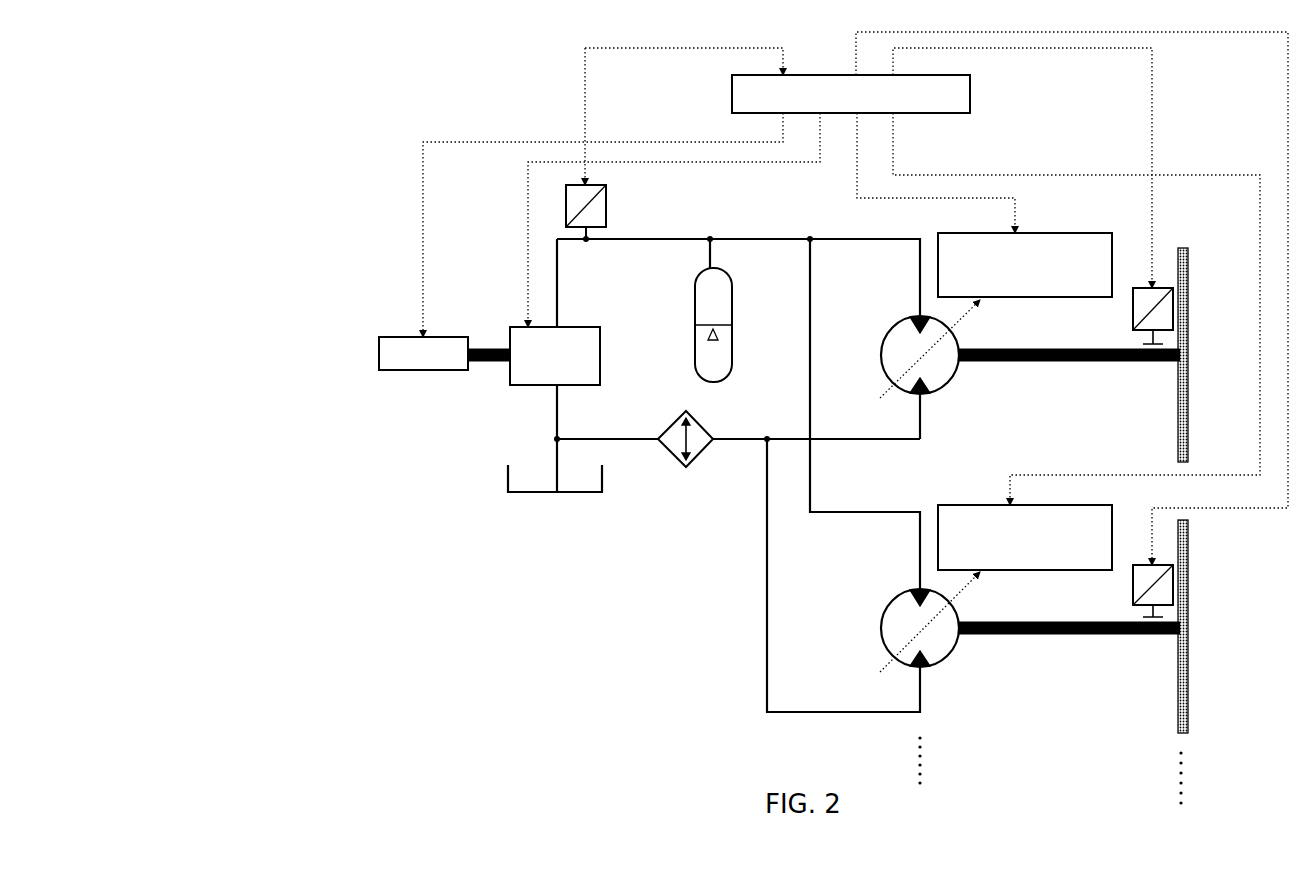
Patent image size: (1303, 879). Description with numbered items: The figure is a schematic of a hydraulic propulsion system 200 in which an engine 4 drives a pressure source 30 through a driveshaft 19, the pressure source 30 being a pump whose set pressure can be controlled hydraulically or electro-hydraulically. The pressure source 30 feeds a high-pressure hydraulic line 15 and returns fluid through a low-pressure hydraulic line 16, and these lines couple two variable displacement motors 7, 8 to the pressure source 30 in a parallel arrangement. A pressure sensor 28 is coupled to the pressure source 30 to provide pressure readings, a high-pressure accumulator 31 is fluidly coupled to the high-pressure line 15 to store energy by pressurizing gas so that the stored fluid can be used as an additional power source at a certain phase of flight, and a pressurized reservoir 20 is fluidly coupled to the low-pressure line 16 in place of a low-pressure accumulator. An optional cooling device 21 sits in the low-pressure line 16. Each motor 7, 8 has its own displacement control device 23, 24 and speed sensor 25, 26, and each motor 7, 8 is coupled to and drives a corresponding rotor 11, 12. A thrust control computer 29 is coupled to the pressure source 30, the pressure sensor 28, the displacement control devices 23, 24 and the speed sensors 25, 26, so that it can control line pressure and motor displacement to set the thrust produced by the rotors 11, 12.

The propulsion system 200 is at (146, 102).
The thrust control computer 29 is at (730, 90).
The pressure sensor 28 is at (608, 215).
The hydraulic line 15 is at (668, 243).
The hydraulic line 16 is at (598, 435).
The driveshaft 19 is at (488, 345).
The engine 4 is at (377, 358).
The pressure source 30 is at (602, 355).
The pressurized reservoir 20 is at (608, 488).
The cooling device 21 is at (672, 424).
The high-pressure accumulator 31 is at (734, 360).
The motor 7 is at (890, 323).
The motor 8 is at (891, 596).
The displacement control device 23 is at (995, 300).
The displacement control device 24 is at (995, 572).
The speed sensor 25 is at (1131, 315).
The speed sensor 26 is at (1131, 588).
The rotor 11 is at (1190, 277).
The rotor 12 is at (1190, 550).